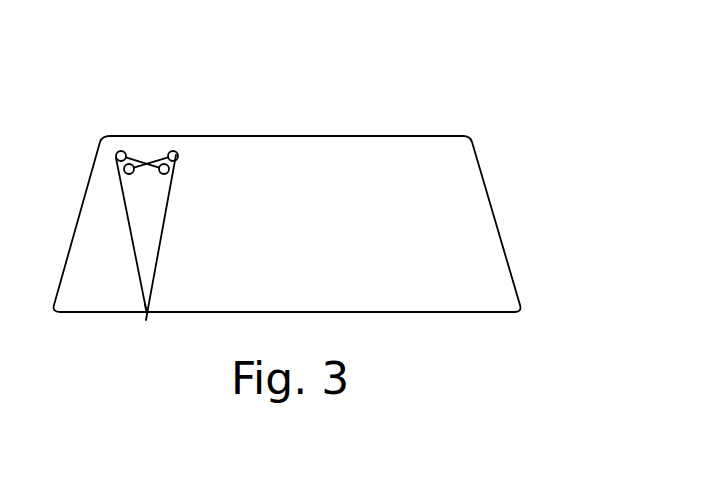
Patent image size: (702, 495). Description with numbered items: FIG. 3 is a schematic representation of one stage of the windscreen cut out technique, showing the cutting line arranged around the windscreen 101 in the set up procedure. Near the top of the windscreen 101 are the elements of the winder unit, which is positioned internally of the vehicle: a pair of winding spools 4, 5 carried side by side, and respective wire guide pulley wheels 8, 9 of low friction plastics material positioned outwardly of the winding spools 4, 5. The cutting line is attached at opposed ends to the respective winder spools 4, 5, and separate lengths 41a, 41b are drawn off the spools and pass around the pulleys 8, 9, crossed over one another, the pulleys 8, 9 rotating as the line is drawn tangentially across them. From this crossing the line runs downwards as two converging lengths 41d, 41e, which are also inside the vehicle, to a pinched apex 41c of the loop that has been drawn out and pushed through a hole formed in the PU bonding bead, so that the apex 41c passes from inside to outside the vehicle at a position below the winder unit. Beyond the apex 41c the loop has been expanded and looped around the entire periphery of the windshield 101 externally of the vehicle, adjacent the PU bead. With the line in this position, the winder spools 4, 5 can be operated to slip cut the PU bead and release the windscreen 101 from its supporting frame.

The windscreen 101 is at (498, 218).
The wire guide pulley wheel 8 is at (116, 155).
The winding spool 5 is at (126, 172).
The wire guide pulley wheel 9 is at (178, 155).
The winding spool 4 is at (168, 172).
The length of cutting line 41a is at (130, 152).
The length of cutting line 41b is at (167, 152).
The pinched apex of the loop of line 41c is at (146, 318).
The length of line 41d is at (158, 260).
The length of line 41e is at (133, 246).